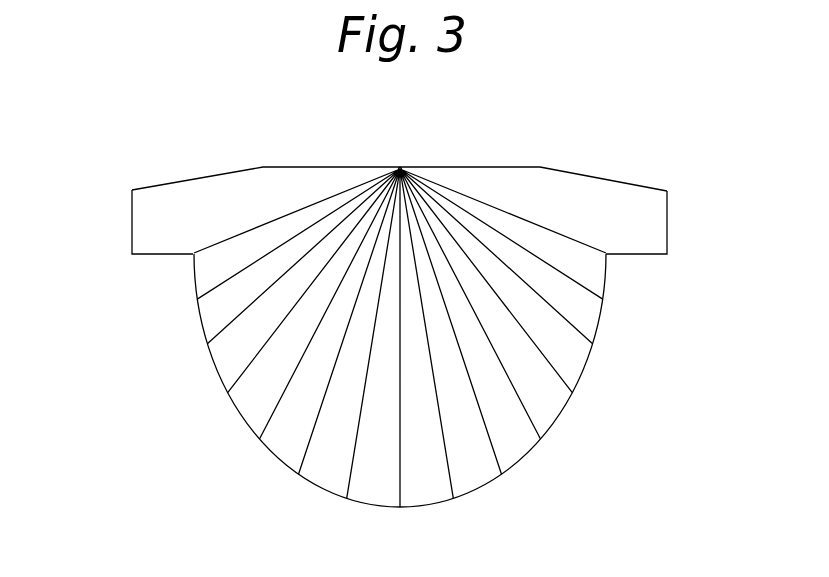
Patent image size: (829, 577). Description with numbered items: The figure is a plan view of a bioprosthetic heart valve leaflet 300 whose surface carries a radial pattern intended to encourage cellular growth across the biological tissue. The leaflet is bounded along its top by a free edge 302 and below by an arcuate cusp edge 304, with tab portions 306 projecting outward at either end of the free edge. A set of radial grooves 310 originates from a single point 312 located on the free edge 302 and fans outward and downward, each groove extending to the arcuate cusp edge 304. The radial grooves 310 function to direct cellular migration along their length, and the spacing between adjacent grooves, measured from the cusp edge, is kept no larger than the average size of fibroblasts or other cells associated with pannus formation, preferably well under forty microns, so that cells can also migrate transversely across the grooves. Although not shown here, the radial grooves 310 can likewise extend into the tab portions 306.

The bioprosthetic heart valve leaflet 300 is at (153, 139).
The free edge 302 is at (572, 173).
The arcuate cusp edge 304 is at (490, 487).
The tab portions 306 is at (668, 217).
The radial grooves 310 is at (272, 413).
The point 312 is at (400, 166).